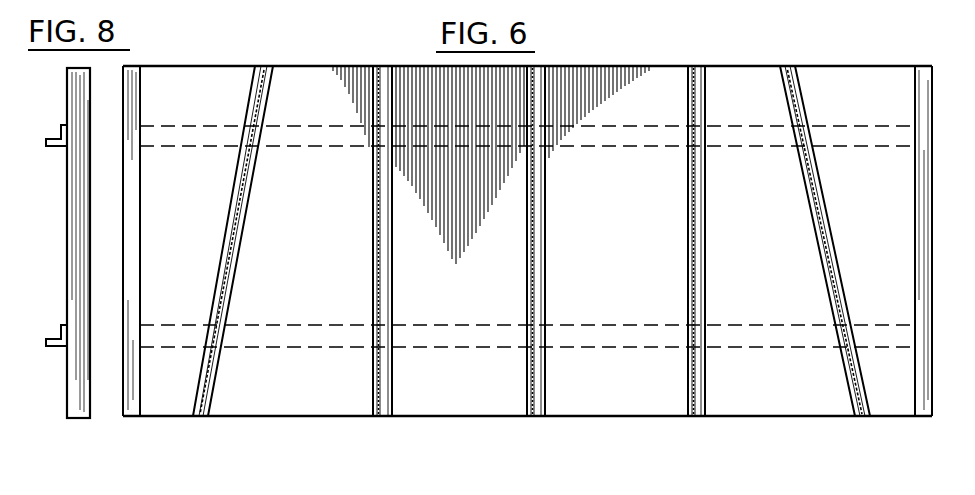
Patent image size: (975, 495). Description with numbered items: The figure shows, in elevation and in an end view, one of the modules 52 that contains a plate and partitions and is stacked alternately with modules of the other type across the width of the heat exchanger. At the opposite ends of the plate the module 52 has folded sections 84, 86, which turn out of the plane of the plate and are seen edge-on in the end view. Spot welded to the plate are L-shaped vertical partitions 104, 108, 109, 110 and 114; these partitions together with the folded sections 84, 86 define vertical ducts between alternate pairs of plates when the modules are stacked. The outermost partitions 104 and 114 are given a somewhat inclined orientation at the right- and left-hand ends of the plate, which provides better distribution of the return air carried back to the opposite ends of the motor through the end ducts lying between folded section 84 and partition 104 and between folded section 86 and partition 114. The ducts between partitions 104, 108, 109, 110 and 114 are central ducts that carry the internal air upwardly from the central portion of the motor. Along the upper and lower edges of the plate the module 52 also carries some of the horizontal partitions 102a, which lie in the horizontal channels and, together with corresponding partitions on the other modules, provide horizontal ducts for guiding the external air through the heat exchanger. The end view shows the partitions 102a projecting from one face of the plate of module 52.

In FIG. 8, the module 52 is at (76, 392).
In FIG. 6, the module 52 is at (851, 72).
In FIG. 6, the folded section 84 is at (141, 243).
In FIG. 6, the folded section 86 is at (922, 70).
In FIG. 8, the horizontal partition 102a is at (53, 137).
In FIG. 6, the horizontal partition 102a is at (345, 148).
In FIG. 6, the L-shaped partition 104 is at (262, 98).
In FIG. 6, the vertical partition 108 is at (393, 164).
In FIG. 6, the vertical partition 109 is at (546, 160).
In FIG. 6, the vertical partition 110 is at (706, 162).
In FIG. 6, the L-shaped partition 114 is at (810, 146).